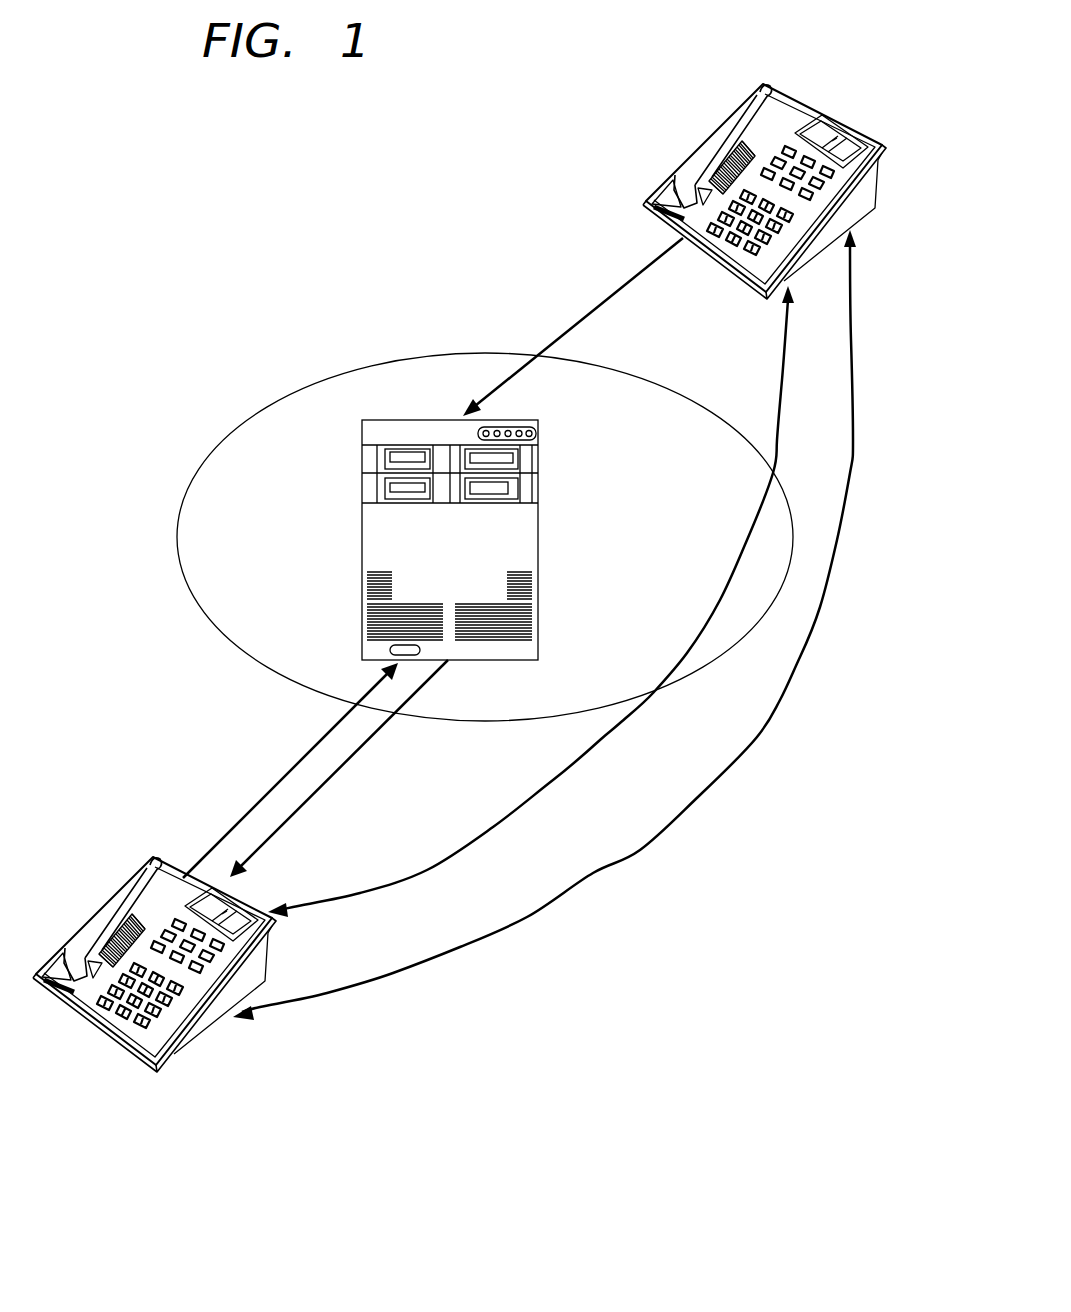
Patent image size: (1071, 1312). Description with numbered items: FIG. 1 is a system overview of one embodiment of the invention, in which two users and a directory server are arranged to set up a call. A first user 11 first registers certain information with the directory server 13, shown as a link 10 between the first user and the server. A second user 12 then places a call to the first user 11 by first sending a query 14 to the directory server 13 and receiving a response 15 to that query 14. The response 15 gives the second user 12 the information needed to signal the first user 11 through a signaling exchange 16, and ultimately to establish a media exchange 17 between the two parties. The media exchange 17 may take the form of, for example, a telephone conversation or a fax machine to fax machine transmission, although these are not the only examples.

The communication link between telephone and directory server 10 is at (594, 305).
The first user 11 is at (830, 107).
The second user 12 is at (127, 1050).
The directory server 13 is at (532, 538).
The query 14 is at (265, 793).
The response 15 is at (315, 795).
The signaling exchange 16 is at (560, 780).
The media exchange 17 is at (707, 800).